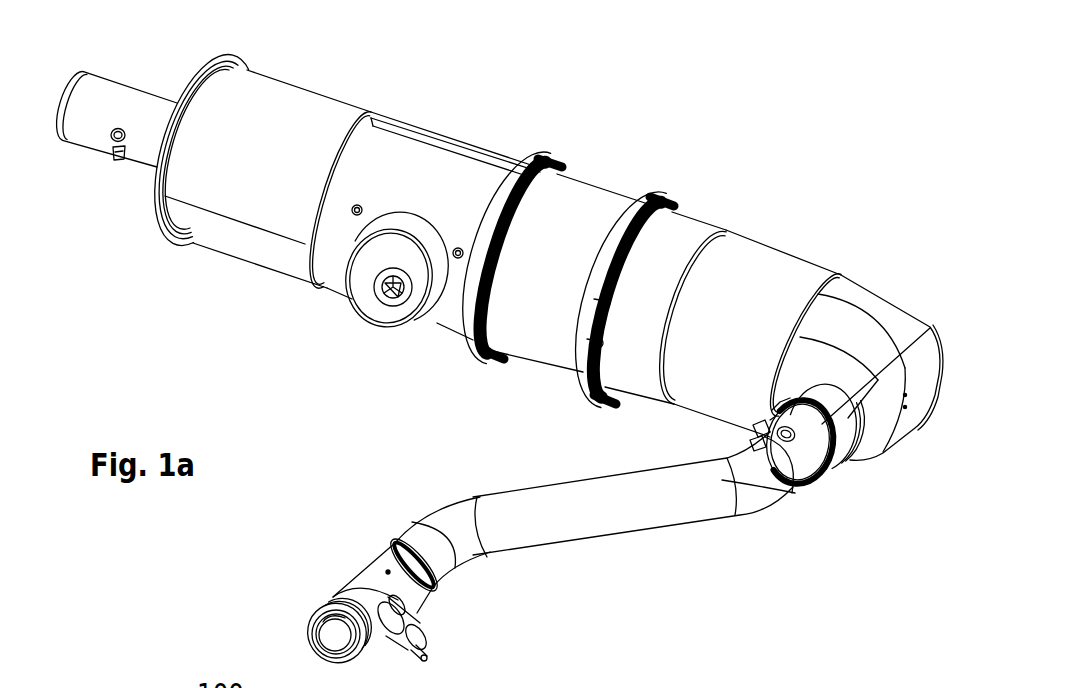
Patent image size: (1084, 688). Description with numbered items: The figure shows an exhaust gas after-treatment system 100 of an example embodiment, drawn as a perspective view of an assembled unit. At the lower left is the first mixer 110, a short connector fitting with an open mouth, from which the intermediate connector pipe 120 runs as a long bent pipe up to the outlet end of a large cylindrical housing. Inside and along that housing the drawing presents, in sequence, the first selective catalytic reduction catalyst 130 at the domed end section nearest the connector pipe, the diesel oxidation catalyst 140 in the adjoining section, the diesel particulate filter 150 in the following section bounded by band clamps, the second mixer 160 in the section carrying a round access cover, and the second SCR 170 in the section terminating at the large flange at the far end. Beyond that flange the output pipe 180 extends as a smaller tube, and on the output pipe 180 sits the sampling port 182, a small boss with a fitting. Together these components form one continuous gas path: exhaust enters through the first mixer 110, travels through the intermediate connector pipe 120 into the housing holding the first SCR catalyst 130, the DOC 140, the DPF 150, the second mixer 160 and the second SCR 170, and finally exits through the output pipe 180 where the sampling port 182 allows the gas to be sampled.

The exhaust gas aftertreatment system 100 is at (369, 395).
The first mixer 110 is at (363, 568).
The intermediate connector pipe 120 is at (602, 535).
The first selective catalytic reduction (SCR) catalyst 130 is at (790, 263).
The diesel oxidation catalyst (DOC) 140 is at (690, 230).
The diesel particulate filter (DPF) 150 is at (593, 203).
The second mixer 160 is at (420, 137).
The second SCR 170 is at (303, 97).
The output pipe 180 is at (108, 78).
The sampling port 182 is at (116, 163).